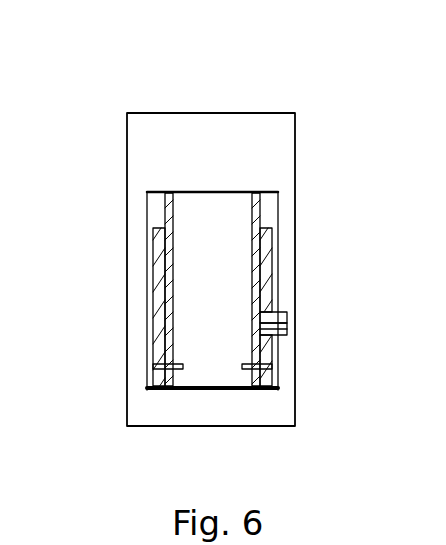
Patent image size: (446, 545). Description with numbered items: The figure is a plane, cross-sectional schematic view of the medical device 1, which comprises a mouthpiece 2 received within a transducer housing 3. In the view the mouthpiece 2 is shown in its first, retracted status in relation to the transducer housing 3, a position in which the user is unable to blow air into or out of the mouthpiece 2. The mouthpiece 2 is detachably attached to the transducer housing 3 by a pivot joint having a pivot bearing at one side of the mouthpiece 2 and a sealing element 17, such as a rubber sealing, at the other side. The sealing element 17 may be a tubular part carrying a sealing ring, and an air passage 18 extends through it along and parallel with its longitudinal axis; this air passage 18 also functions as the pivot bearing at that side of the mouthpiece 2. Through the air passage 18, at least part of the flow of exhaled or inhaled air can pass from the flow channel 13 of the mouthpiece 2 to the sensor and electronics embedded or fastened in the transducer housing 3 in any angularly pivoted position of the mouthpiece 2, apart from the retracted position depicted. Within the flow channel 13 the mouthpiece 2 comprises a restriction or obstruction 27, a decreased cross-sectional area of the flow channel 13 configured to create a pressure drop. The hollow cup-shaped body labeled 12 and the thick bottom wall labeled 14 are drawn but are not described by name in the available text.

The medical device 1 is at (117, 104).
The mouthpiece 2 is at (158, 318).
The transducer housing 3 is at (272, 415).
The cup 12 is at (213, 187).
The flow channel 13 is at (190, 223).
The bottom 14 is at (182, 394).
The sealing element 17 is at (288, 330).
The air passage 18 is at (289, 320).
The restriction or obstruction 27 is at (165, 367).